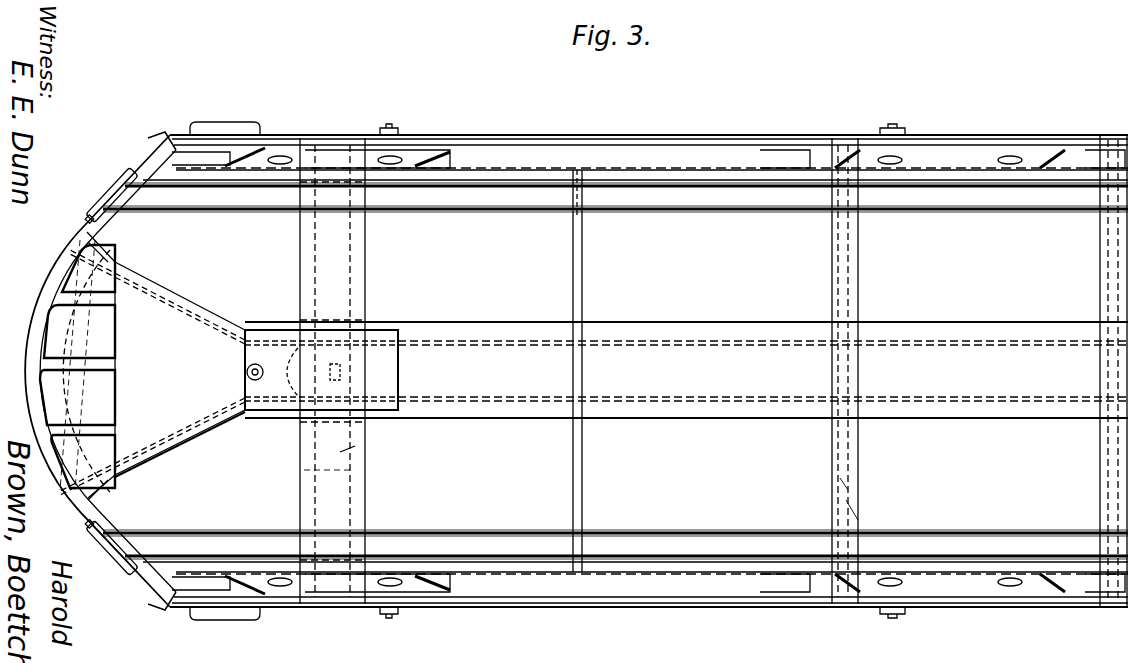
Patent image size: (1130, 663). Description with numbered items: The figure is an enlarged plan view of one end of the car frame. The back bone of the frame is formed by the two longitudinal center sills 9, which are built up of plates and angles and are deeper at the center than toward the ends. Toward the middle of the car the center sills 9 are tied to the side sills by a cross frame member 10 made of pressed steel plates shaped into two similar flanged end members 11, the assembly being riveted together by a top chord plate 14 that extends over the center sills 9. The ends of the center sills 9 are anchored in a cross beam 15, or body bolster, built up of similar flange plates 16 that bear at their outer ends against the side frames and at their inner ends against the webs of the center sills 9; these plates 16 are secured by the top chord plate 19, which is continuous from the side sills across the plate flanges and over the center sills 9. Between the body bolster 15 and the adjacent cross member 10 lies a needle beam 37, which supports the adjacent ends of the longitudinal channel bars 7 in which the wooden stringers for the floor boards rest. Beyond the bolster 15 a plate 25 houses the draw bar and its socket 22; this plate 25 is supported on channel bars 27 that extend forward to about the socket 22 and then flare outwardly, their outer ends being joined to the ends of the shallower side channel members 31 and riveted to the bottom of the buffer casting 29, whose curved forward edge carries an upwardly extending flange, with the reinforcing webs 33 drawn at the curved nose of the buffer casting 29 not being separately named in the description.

The longitudinal channel bar 7 is at (520, 222).
The center sill 9 is at (1005, 326).
The cross frame member 10 is at (860, 456).
The end member 11 is at (848, 490).
The top chord plate 14 is at (858, 520).
The cross beam 15 is at (362, 492).
The flange plate 16 is at (352, 470).
The top chord plate 19 is at (355, 446).
The socket 22 is at (258, 364).
The plate 25 is at (218, 388).
The channel bar 27 is at (182, 318).
The buffer casting 29 is at (43, 418).
The channel member 31 is at (98, 552).
The bumper rib 33 is at (95, 340).
The needle beam 37 is at (582, 275).